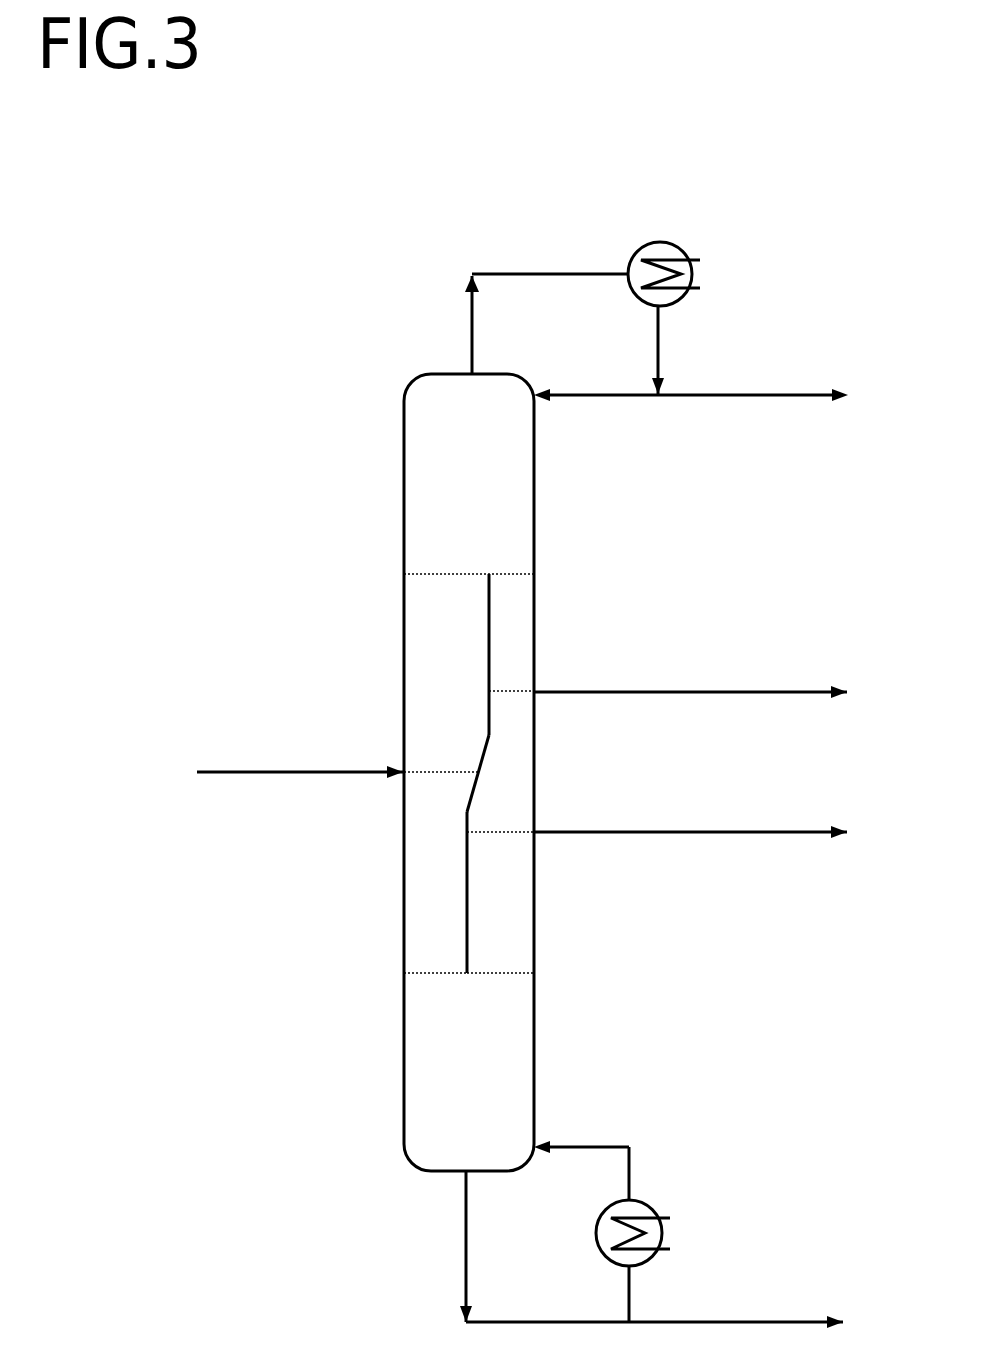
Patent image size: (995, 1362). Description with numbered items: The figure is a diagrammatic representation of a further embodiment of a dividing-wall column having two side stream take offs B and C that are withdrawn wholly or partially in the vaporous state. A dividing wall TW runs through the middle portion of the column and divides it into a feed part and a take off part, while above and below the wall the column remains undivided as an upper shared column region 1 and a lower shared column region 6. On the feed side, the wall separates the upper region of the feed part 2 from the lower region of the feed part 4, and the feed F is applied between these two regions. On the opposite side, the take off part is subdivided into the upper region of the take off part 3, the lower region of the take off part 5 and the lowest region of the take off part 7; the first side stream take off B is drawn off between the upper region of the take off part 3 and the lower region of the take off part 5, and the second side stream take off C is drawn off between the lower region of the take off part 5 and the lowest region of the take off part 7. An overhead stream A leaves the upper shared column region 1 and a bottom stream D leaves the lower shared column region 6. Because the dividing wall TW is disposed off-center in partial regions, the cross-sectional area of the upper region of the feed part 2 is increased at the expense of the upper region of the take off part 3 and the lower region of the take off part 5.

The upper shared column region 1 is at (469, 514).
The upper region of the feed part 2 is at (441, 716).
The upper region of the take off part 3 is at (511, 660).
The lower region of the feed part 4 is at (435, 918).
The lower region of the take off part 5 is at (488, 769).
The lower shared column region 6 is at (497, 1024).
The lowest region of the take off part 7 is at (500, 874).
The dividing wall TW is at (485, 625).
The overhead stream A is at (703, 390).
The side stream take off B is at (701, 690).
The side stream take off C is at (702, 830).
The bottom stream D is at (668, 1239).
The feed F is at (285, 768).